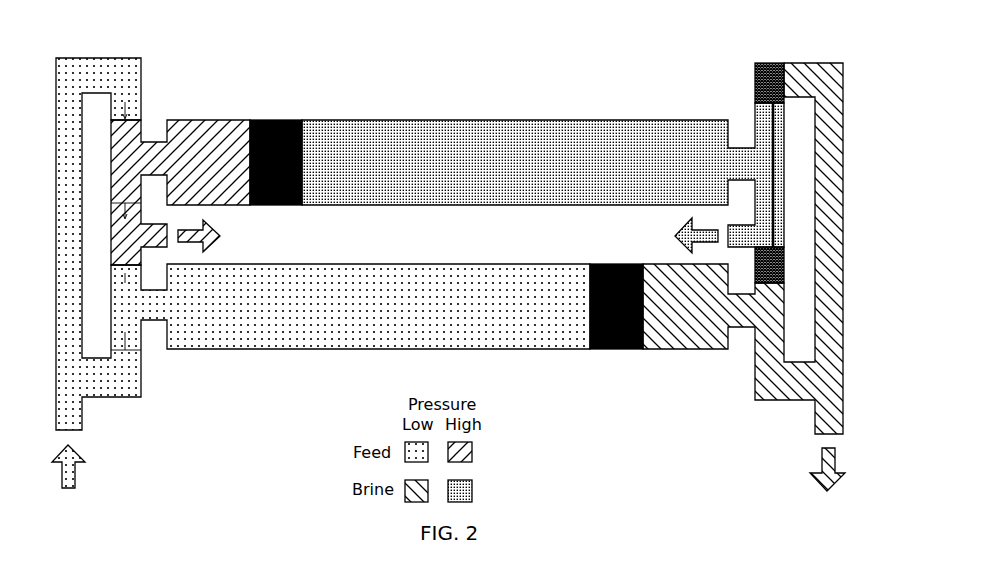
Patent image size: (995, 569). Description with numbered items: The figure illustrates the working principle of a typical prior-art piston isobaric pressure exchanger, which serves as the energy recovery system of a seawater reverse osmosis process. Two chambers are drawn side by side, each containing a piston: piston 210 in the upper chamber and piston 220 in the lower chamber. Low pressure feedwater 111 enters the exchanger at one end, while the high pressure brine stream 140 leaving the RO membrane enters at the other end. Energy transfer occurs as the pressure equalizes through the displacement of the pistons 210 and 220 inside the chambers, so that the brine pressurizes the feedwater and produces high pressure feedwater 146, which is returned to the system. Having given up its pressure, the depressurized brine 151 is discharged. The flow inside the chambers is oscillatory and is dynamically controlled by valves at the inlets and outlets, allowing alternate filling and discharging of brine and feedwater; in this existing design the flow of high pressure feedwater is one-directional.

The feedwater 111 is at (92, 466).
The depressurized brine 151 is at (795, 469).
The high pressure feedwater 146 is at (224, 236).
The high pressure brine stream 140 is at (674, 235).
The piston 210 is at (288, 120).
The piston 220 is at (625, 350).